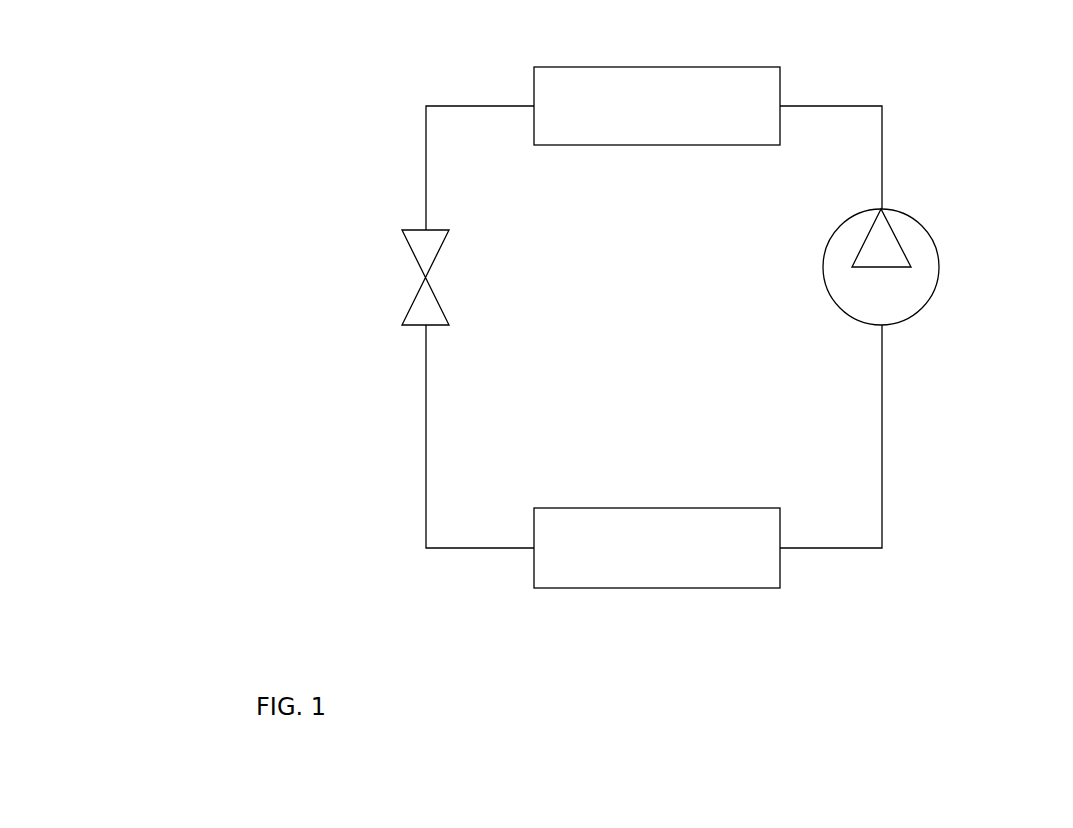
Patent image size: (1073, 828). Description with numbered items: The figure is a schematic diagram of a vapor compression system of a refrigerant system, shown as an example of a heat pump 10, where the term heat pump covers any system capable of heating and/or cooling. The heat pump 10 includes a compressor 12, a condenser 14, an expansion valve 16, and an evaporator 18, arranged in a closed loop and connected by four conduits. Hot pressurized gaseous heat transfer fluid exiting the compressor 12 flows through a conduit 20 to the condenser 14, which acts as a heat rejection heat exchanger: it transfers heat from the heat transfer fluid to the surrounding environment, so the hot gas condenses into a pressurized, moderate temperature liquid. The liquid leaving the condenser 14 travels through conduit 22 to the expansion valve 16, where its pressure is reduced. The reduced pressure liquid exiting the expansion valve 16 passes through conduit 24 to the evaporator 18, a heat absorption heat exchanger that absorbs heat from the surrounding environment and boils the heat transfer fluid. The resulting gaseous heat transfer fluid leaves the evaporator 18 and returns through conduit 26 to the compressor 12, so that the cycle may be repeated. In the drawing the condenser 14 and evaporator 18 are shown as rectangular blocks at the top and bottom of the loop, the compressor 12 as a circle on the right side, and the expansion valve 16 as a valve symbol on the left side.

The heat pump 10 is at (272, 129).
The compressor 12 is at (884, 284).
The condenser 14 is at (657, 106).
The expansion valve 16 is at (412, 303).
The evaporator 18 is at (657, 548).
The conduit 20 is at (882, 140).
The conduit 22 is at (463, 110).
The conduit 24 is at (426, 447).
The conduit 26 is at (882, 399).